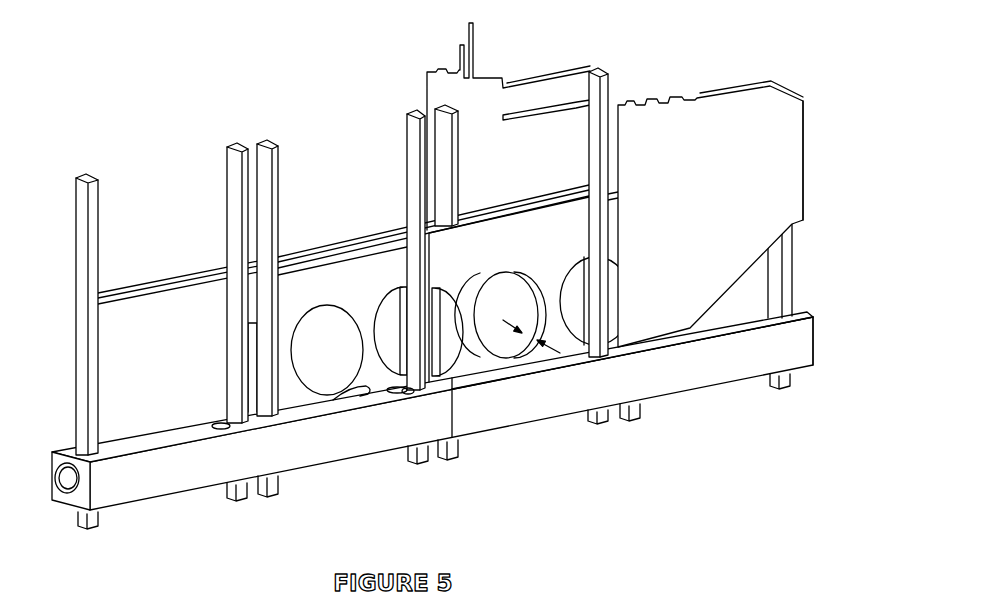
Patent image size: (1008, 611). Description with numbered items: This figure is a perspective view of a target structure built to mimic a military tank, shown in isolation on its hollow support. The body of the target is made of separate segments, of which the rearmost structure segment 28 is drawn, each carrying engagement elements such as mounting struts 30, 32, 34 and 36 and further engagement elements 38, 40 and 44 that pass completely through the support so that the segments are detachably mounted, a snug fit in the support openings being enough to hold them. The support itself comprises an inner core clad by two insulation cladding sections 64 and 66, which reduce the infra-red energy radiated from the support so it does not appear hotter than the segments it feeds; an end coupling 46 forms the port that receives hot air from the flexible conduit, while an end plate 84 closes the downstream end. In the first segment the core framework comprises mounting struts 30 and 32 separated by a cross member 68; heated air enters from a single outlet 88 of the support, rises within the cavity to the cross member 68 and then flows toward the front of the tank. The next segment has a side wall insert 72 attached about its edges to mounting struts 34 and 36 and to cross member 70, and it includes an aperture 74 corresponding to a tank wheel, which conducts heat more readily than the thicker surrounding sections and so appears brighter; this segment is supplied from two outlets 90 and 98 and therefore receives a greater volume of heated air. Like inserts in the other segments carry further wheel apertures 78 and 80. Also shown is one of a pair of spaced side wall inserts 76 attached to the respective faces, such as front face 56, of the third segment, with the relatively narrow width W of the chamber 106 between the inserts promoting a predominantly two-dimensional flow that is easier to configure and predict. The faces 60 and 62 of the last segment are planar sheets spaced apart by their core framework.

The structure segment 28 is at (681, 224).
The mounting strut 30 is at (97, 211).
The mounting strut 32 is at (230, 193).
The mounting strut 34 is at (268, 138).
The mounting strut 36 is at (412, 135).
The engagement element 38 is at (442, 117).
The engagement element 40 is at (592, 122).
The engagement element 44 is at (783, 270).
The end coupling 46 is at (62, 492).
The front face 56 is at (552, 100).
The front face 60 is at (731, 88).
The front face 62 is at (770, 148).
The insulation cladding section 64 is at (163, 480).
The insulation cladding section 66 is at (677, 373).
The cross member 68 is at (133, 297).
The cross member 70 is at (285, 257).
The side wall insert 72 is at (373, 292).
The aperture 74 is at (313, 380).
The side wall insert 76 is at (540, 245).
The aperture 78 is at (402, 307).
The aperture 80 is at (497, 343).
The end plate 84 is at (813, 342).
The outlet 88 is at (217, 420).
The outlet 90 is at (363, 388).
The outlet 98 is at (384, 392).
The chamber 106 is at (493, 300).
The width W is at (545, 352).